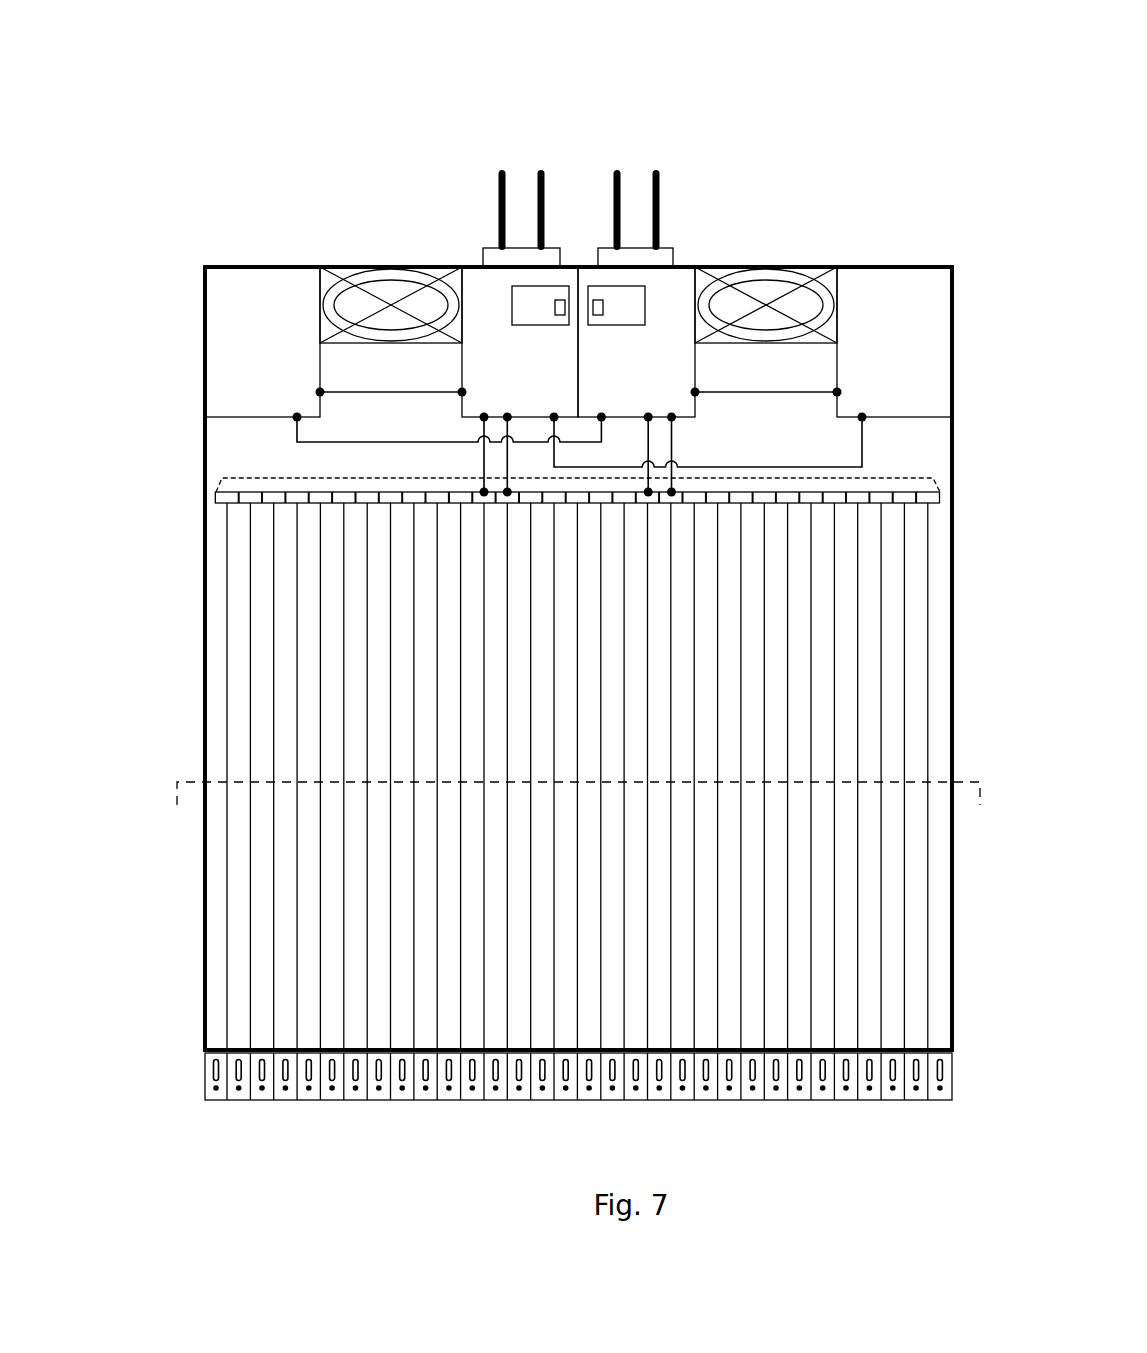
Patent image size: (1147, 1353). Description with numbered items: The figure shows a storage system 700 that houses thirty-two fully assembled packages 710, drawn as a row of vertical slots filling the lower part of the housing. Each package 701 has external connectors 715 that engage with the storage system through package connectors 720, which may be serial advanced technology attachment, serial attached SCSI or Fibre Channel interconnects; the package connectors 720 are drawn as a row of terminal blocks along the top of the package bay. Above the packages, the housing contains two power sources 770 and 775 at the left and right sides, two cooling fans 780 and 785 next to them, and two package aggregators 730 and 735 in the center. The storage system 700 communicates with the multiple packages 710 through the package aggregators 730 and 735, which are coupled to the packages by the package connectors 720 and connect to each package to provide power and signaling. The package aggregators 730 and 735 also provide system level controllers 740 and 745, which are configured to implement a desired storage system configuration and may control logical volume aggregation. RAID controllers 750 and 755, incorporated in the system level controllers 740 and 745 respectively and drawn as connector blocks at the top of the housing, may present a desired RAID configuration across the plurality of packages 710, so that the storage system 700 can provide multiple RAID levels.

The storage system 700 is at (771, 137).
The package 701 is at (221, 705).
The fully assembled packages 710 is at (186, 783).
The external connectors 715 is at (212, 489).
The package connectors 720 is at (224, 485).
The package aggregator 730 is at (520, 342).
The package aggregator 735 is at (636, 342).
The system level controller 740 is at (540, 305).
The system level controller 745 is at (616, 305).
The RAID controller 750 is at (562, 298).
The RAID controller 755 is at (597, 298).
The power source 770 is at (262, 342).
The power source 775 is at (894, 342).
The cooling fan 780 is at (392, 275).
The cooling fan 785 is at (767, 275).